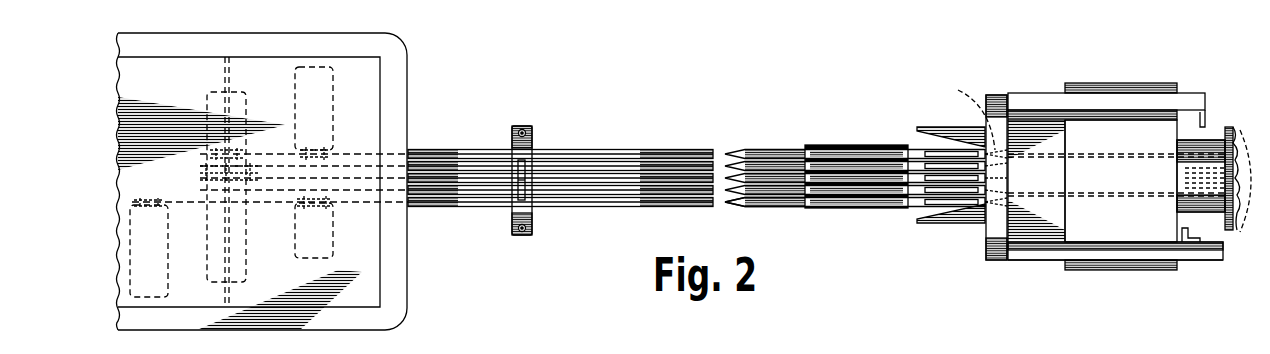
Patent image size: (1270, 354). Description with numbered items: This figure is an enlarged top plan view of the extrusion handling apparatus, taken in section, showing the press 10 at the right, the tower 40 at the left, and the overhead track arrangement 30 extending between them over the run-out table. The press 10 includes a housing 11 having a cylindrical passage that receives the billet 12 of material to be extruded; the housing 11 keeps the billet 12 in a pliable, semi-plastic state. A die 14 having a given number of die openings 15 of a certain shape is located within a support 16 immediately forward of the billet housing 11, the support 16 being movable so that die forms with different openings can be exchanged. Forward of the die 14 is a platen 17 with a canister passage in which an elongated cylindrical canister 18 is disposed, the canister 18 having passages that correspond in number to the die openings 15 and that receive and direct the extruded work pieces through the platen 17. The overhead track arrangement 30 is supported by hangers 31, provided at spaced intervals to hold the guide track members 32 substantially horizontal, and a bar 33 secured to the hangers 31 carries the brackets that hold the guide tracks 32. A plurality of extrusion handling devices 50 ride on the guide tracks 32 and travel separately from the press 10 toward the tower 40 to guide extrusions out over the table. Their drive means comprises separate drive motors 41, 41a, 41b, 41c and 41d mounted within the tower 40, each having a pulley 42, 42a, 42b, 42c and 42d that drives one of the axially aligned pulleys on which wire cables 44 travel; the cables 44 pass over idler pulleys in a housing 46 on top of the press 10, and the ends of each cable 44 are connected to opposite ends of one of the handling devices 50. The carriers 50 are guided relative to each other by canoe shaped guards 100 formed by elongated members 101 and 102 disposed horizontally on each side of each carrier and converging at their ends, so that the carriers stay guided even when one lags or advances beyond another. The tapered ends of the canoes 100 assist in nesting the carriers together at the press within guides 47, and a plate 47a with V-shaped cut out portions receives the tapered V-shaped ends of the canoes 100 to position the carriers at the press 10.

The press 10 is at (1135, 270).
The housing 11 is at (1243, 128).
The billet 12 is at (1129, 248).
The die 14 is at (1203, 231).
The die openings 15 is at (1198, 184).
The support 16 is at (1205, 140).
The platen 17 is at (1118, 83).
The canister 18 is at (1111, 152).
The overhead track arrangement 30 is at (664, 143).
The hangers 31 is at (518, 190).
The guide track members 32 is at (555, 194).
The bar 33 is at (531, 148).
The tower 40 is at (412, 284).
The drive motor 41 is at (130, 203).
The drive motor 41a is at (290, 243).
The drive motor 41b is at (333, 97).
The drive motor 41c is at (207, 256).
The drive motor 41d is at (233, 95).
The pulley 42 is at (148, 202).
The pulley 42a is at (308, 200).
The pulley 42b is at (325, 150).
The pulley 42c is at (224, 210).
The pulley 42d is at (242, 155).
The wire cables 44 is at (487, 202).
The housing 46 is at (1028, 264).
The guides 47 is at (940, 129).
The plate 47a is at (962, 113).
The extrusion handling devices 50 is at (868, 214).
The canoe shaped guards 100 is at (772, 195).
The elongated member 101 is at (766, 200).
The elongated member 102 is at (752, 207).